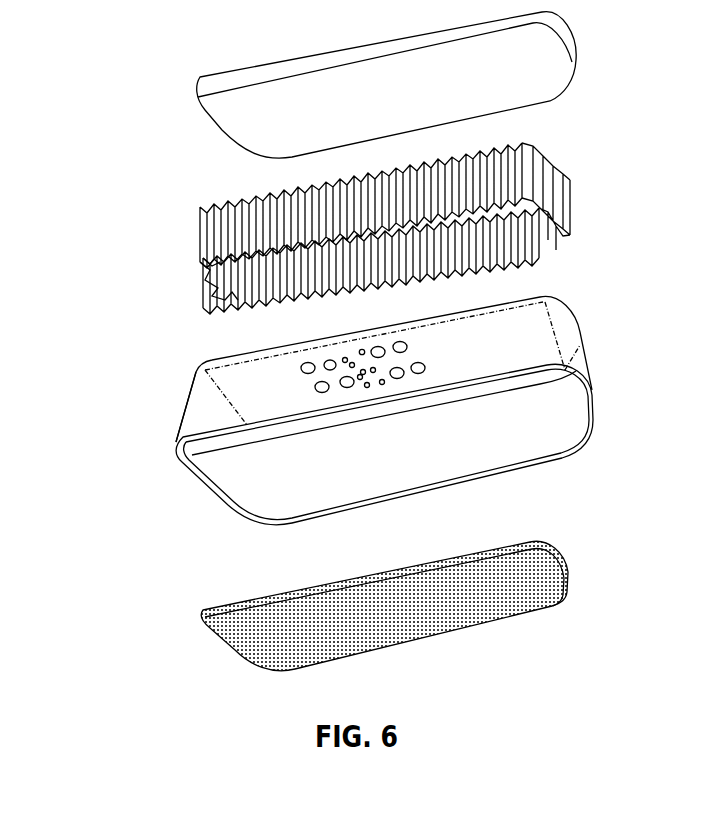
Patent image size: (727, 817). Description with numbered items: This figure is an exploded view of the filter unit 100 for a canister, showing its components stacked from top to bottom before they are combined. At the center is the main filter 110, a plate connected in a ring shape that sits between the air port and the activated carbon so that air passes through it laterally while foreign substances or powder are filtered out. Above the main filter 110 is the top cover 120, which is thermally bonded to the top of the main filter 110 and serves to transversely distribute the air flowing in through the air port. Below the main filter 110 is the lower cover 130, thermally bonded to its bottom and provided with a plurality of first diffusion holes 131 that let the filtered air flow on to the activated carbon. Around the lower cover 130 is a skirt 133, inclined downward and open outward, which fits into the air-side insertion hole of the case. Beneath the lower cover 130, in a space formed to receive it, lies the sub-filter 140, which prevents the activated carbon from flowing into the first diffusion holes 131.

The filter unit 100 is at (118, 196).
The main filter 110 is at (570, 192).
The top cover 120 is at (556, 80).
The lower cover 130 is at (335, 415).
The first diffusion holes 131 is at (305, 370).
The skirt 133 is at (194, 416).
The sub-filter 140 is at (237, 623).